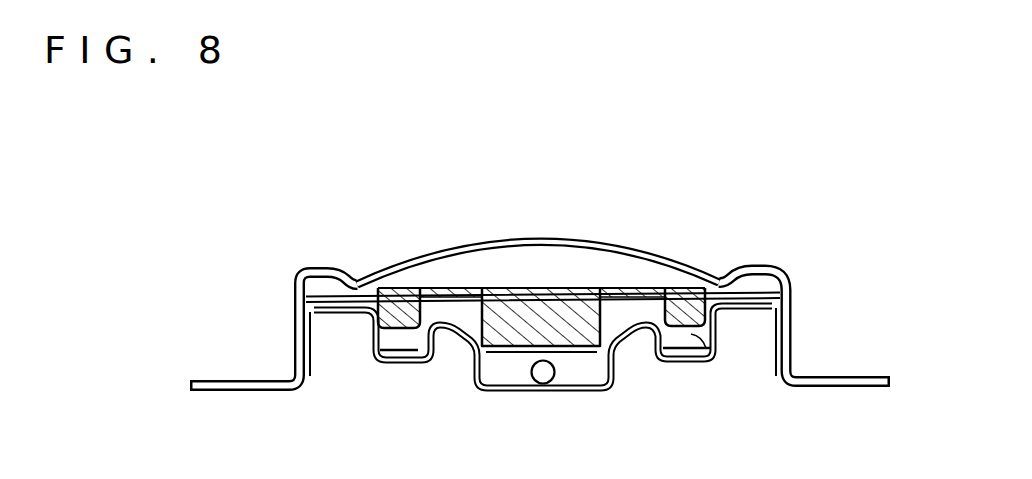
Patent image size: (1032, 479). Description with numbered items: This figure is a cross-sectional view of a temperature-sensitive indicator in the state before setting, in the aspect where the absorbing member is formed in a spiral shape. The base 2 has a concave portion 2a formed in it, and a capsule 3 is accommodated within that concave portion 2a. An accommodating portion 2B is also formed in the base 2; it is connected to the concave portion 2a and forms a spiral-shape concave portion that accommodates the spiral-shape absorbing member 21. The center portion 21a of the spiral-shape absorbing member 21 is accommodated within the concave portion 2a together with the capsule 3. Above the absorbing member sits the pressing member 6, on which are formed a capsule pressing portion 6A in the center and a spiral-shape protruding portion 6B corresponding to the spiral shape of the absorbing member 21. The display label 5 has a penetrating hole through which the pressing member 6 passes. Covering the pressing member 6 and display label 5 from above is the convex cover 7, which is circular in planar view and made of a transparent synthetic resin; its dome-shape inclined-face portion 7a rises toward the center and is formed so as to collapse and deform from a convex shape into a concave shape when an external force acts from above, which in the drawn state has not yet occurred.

The base 2 is at (781, 390).
The concave portion 2a is at (475, 389).
The accommodating portion 2B is at (410, 364).
The capsule 3 is at (555, 370).
The display label 5 is at (757, 296).
The pressing member 6 is at (580, 302).
The capsule pressing portion 6A is at (543, 311).
The protruding portion 6B is at (397, 287).
The cover 7 is at (793, 332).
The inclined-face portion 7a is at (453, 249).
The absorbing member 21 is at (379, 349).
The center portion 21a is at (520, 353).